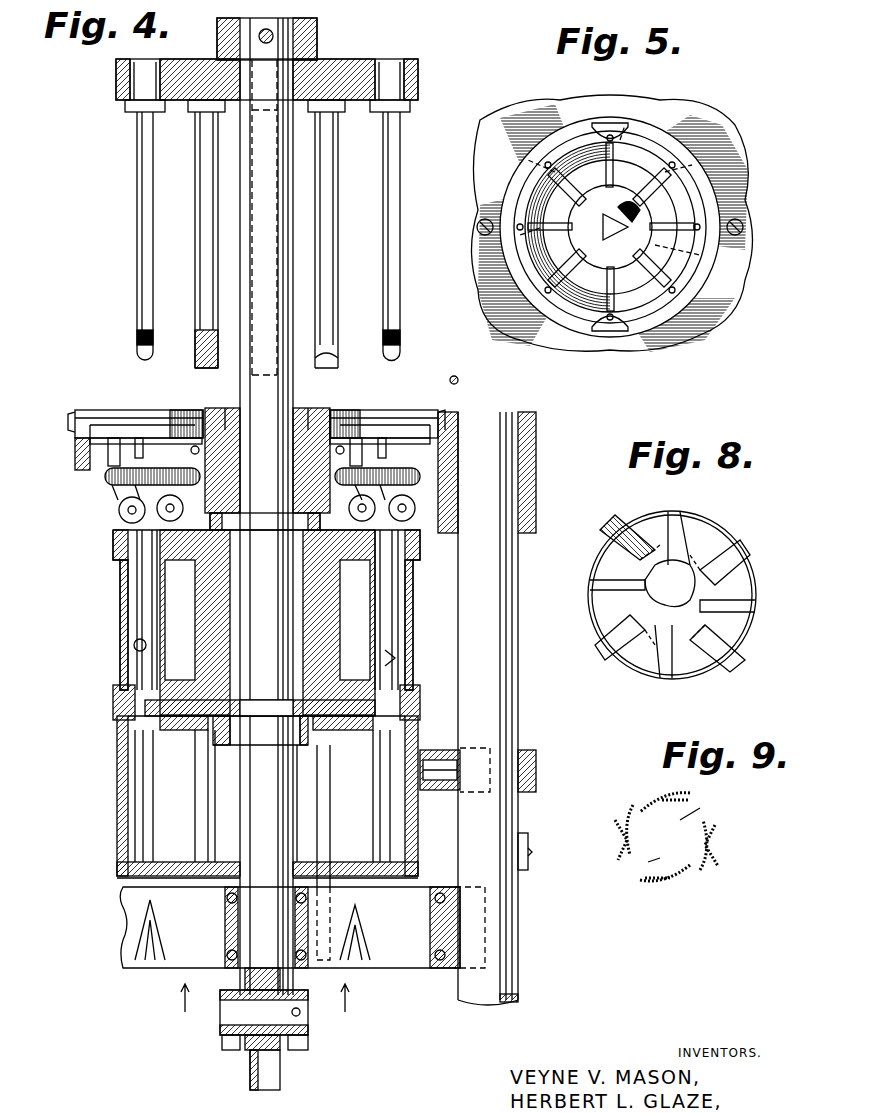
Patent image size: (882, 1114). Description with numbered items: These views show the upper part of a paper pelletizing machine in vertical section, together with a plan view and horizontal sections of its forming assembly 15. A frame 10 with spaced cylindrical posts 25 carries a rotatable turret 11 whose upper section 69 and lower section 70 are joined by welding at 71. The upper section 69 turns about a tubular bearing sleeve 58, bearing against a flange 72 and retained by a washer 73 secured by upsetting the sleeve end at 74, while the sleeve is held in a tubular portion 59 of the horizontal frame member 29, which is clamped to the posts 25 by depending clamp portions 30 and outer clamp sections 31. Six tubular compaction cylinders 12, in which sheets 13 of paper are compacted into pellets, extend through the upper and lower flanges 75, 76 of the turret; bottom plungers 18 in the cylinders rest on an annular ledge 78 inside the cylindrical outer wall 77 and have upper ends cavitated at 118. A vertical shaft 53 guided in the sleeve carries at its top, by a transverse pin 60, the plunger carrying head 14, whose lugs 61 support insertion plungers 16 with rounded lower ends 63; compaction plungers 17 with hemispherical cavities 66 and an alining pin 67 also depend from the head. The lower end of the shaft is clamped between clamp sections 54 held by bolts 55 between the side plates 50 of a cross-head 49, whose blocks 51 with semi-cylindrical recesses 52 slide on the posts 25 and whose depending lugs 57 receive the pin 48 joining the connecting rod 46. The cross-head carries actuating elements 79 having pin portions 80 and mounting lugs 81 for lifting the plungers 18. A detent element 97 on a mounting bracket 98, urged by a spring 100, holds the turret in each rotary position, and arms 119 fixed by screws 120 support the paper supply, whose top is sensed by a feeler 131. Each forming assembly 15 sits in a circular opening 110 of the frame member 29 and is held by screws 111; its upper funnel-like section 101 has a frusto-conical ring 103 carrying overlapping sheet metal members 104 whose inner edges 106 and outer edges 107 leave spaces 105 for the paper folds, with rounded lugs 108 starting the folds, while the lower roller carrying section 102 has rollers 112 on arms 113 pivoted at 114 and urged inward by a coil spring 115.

In FIG. 4, the plunger carrying head 14 is at (318, 32).
In FIG. 4, the transverse pin 60 is at (259, 36).
In FIG. 4, the lugs 61 is at (116, 80).
In FIG. 4, the tubular bearing sleeve 58 is at (225, 410).
In FIG. 4, the tubular portion 59 is at (285, 428).
In FIG. 4, the alining pin 67 is at (252, 183).
In FIG. 4, the insertion plungers 16 is at (137, 275).
In FIG. 4, the compaction plungers 17 is at (195, 245).
In FIG. 4, the lower ends 63 is at (137, 355).
In FIG. 4, the hemispherical cavities 66 is at (195, 360).
In FIG. 4, the forming assembly 15 is at (178, 412).
In FIG. 5, the forming assembly 15 is at (718, 155).
In FIG. 8, the forming assembly 15 is at (660, 508).
In FIG. 9, the forming assembly 15 is at (652, 789).
In FIG. 4, the circular opening 110 is at (75, 445).
In FIG. 5, the circular opening 110 is at (720, 292).
In FIG. 4, the screws 111 is at (68, 414).
In FIG. 5, the screws 111 is at (480, 234).
In FIG. 4, the feeler 131 is at (458, 377).
In FIG. 4, the horizontal plate-like frame member 29 is at (500, 416).
In FIG. 4, the depending clamp portions 30 is at (530, 436).
In FIG. 4, the outer clamp sections 31 is at (536, 450).
In FIG. 4, the pivot 114 is at (195, 450).
In FIG. 4, the lower roller carrying section 102 is at (108, 455).
In FIG. 4, the upper funnel-like section 101 is at (110, 438).
In FIG. 5, the upper funnel-like section 101 is at (705, 198).
In FIG. 4, the annular frusto-conical ring 103 is at (95, 420).
In FIG. 5, the annular frusto-conical ring 103 is at (660, 152).
In FIG. 4, the arms 113 is at (105, 476).
In FIG. 4, the sheet metal members 104 is at (118, 492).
In FIG. 5, the sheet metal members 104 is at (609, 152).
In FIG. 8, the sheet metal members 104 is at (735, 550).
In FIG. 4, the coil spring 115 is at (120, 512).
In FIG. 4, the rollers 112 is at (158, 512).
In FIG. 4, the flange 72 is at (270, 530).
In FIG. 4, the upper flange 75 is at (113, 548).
In FIG. 4, the compaction cylinders 12 is at (190, 605).
In FIG. 4, the hemispherical cavities 118 is at (134, 645).
In FIG. 4, the upper section of turret 69 is at (330, 650).
In FIG. 4, the lower flange 76 is at (113, 695).
In FIG. 4, the weld 71 is at (420, 712).
In FIG. 4, the washer 73 is at (285, 712).
In FIG. 4, the turret 11 is at (100, 734).
In FIG. 4, the cylindrical outer wall 77 is at (115, 760).
In FIG. 4, the lower section of turret 70 is at (115, 850).
In FIG. 4, the bottom plungers 18 is at (160, 802).
In FIG. 4, the upset lower end 74 is at (240, 750).
In FIG. 4, the actuating elements 79 is at (330, 790).
In FIG. 4, the vertical pin portion 80 is at (330, 830).
In FIG. 4, the mounting lugs 81 is at (330, 850).
In FIG. 4, the spring 100 is at (440, 790).
In FIG. 4, the detent element 97 is at (425, 750).
In FIG. 4, the mounting bracket 98 is at (536, 770).
In FIG. 4, the frame 10 is at (430, 818).
In FIG. 4, the screws 120 is at (530, 845).
In FIG. 4, the arms 119 is at (528, 870).
In FIG. 4, the annular ledge 78 is at (418, 870).
In FIG. 4, the cylindrical posts 25 is at (512, 922).
In FIG. 4, the side plates 50 is at (365, 968).
In FIG. 4, the cross-head 49 is at (430, 968).
In FIG. 4, the clamp sections 54 is at (225, 918).
In FIG. 4, the bolts 55 is at (306, 898).
In FIG. 4, the vertical shaft 53 is at (290, 932).
In FIG. 4, the blocks 51 is at (430, 920).
In FIG. 4, the semi-cylindrical recess 52 is at (440, 942).
In FIG. 4, the pin 48 is at (308, 1030).
In FIG. 4, the depending lugs 57 is at (230, 1050).
In FIG. 4, the connecting rod 46 is at (280, 1078).
In FIG. 5, the rounded lugs 108 is at (615, 125).
In FIG. 5, the outer edge 107 is at (540, 168).
In FIG. 8, the outer edge 107 is at (690, 512).
In FIG. 9, the outer edge 107 is at (700, 815).
In FIG. 5, the inner edge 106 is at (640, 175).
In FIG. 8, the inner edge 106 is at (625, 525).
In FIG. 9, the inner edge 106 is at (674, 838).
In FIG. 8, the spaces 105 is at (645, 615).
In FIG. 9, the spaces 105 is at (688, 800).
In FIG. 9, the sheets of paper 13 is at (703, 860).